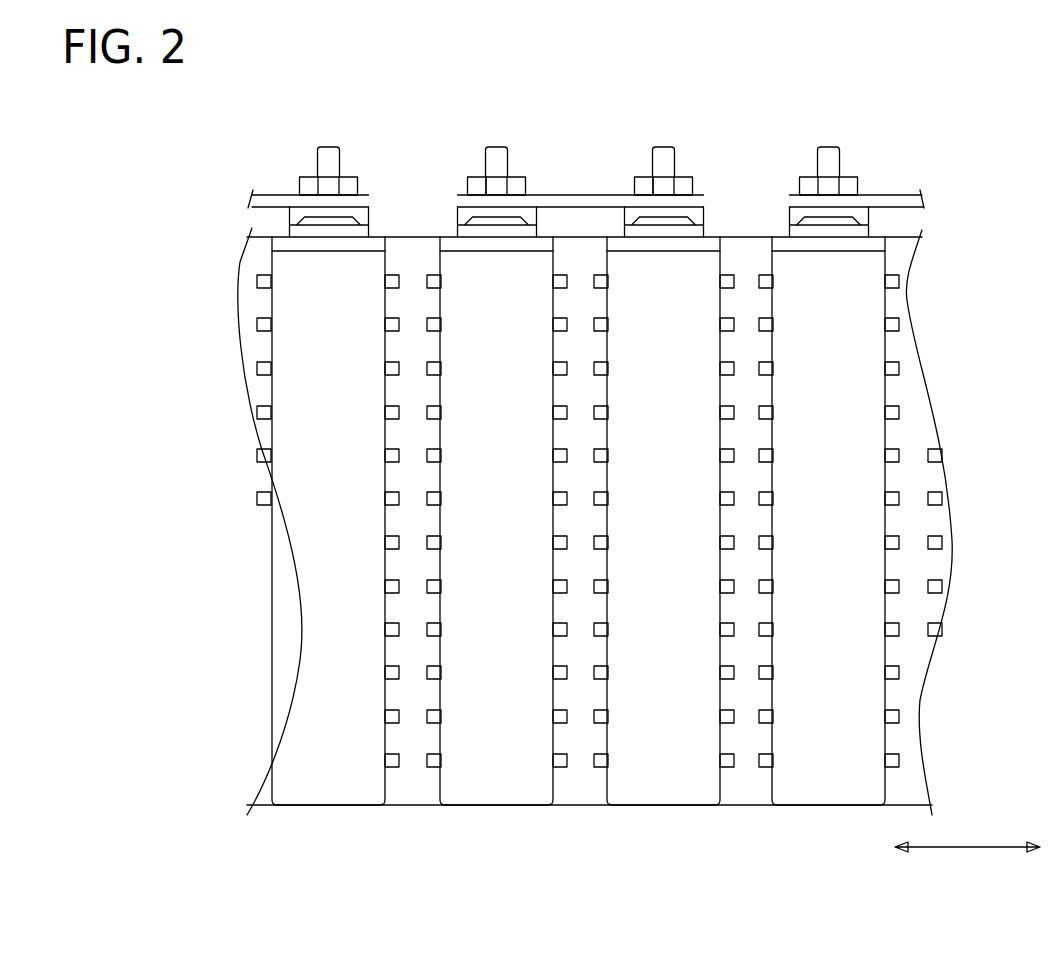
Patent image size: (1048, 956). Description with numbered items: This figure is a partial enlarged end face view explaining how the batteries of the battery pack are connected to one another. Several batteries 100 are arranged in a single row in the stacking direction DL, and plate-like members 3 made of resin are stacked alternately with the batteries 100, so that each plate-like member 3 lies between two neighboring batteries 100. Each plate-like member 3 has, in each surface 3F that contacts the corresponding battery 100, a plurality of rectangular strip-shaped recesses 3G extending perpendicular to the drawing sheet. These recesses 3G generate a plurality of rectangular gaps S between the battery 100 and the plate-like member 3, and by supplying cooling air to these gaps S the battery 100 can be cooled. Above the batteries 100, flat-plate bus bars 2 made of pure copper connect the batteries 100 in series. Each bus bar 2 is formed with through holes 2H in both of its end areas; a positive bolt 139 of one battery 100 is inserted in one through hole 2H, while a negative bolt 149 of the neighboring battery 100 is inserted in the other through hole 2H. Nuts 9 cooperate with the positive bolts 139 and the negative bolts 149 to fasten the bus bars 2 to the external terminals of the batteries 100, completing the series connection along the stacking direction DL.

The bus bar 2 is at (893, 193).
The through hole 2H is at (660, 188).
The plate-like member 3 is at (746, 845).
The surface 3F is at (387, 390).
The recess 3G is at (387, 412).
The nut 9 is at (848, 178).
The battery 100 is at (829, 845).
The positive bolt 139 is at (662, 146).
The negative bolt 149 is at (832, 146).
The gap S is at (387, 628).
The stacking direction DL is at (967, 861).